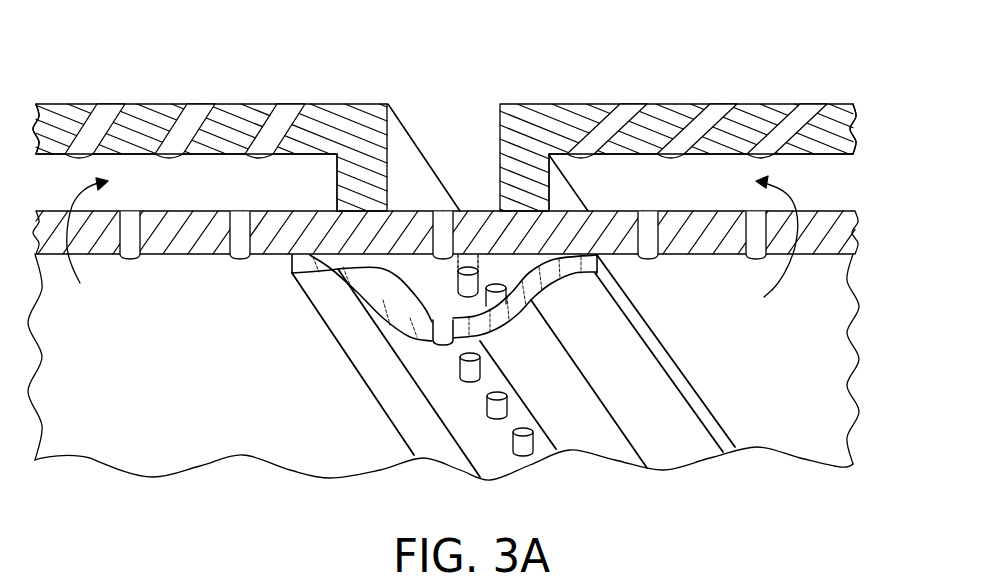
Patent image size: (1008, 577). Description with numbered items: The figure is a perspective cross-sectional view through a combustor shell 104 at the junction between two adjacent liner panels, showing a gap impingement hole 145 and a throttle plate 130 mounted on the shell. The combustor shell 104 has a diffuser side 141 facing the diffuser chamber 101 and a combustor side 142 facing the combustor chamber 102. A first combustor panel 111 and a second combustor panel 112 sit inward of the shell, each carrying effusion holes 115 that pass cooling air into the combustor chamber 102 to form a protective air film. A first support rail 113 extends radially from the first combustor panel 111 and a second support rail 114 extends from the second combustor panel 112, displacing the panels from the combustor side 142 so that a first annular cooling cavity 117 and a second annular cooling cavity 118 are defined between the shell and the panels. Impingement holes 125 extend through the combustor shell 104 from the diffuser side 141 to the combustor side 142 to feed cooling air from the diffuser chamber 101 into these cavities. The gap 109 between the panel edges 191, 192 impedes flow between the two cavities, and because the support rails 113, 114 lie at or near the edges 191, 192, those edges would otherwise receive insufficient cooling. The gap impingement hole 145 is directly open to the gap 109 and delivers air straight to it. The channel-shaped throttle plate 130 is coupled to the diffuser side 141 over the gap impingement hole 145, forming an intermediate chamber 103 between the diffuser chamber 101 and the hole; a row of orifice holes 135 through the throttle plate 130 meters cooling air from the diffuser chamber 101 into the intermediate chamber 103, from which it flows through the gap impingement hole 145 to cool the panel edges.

The diffuser chamber 101 is at (233, 518).
The combustor chamber 102 is at (250, 71).
The intermediate chamber 103 is at (320, 288).
The combustor shell 104 is at (851, 254).
The gap 109 is at (442, 98).
The first combustor panel 111 is at (74, 118).
The second combustor panel 112 is at (832, 118).
The first support rail 113 is at (357, 185).
The second support rail 114 is at (543, 184).
The effusion holes 115 is at (205, 115).
The first annular cooling cavity 117 is at (86, 243).
The second annular cooling cavity 118 is at (762, 304).
The impingement holes 125 is at (240, 259).
The throttle plate 130 is at (665, 422).
The orifice holes 135 is at (517, 457).
The diffuser side 141 is at (848, 298).
The combustor side 142 is at (844, 192).
The gap impingement hole 145 is at (450, 258).
The edge of the first combustor panel 191 is at (398, 118).
The edge of the second combustor panel 192 is at (498, 118).